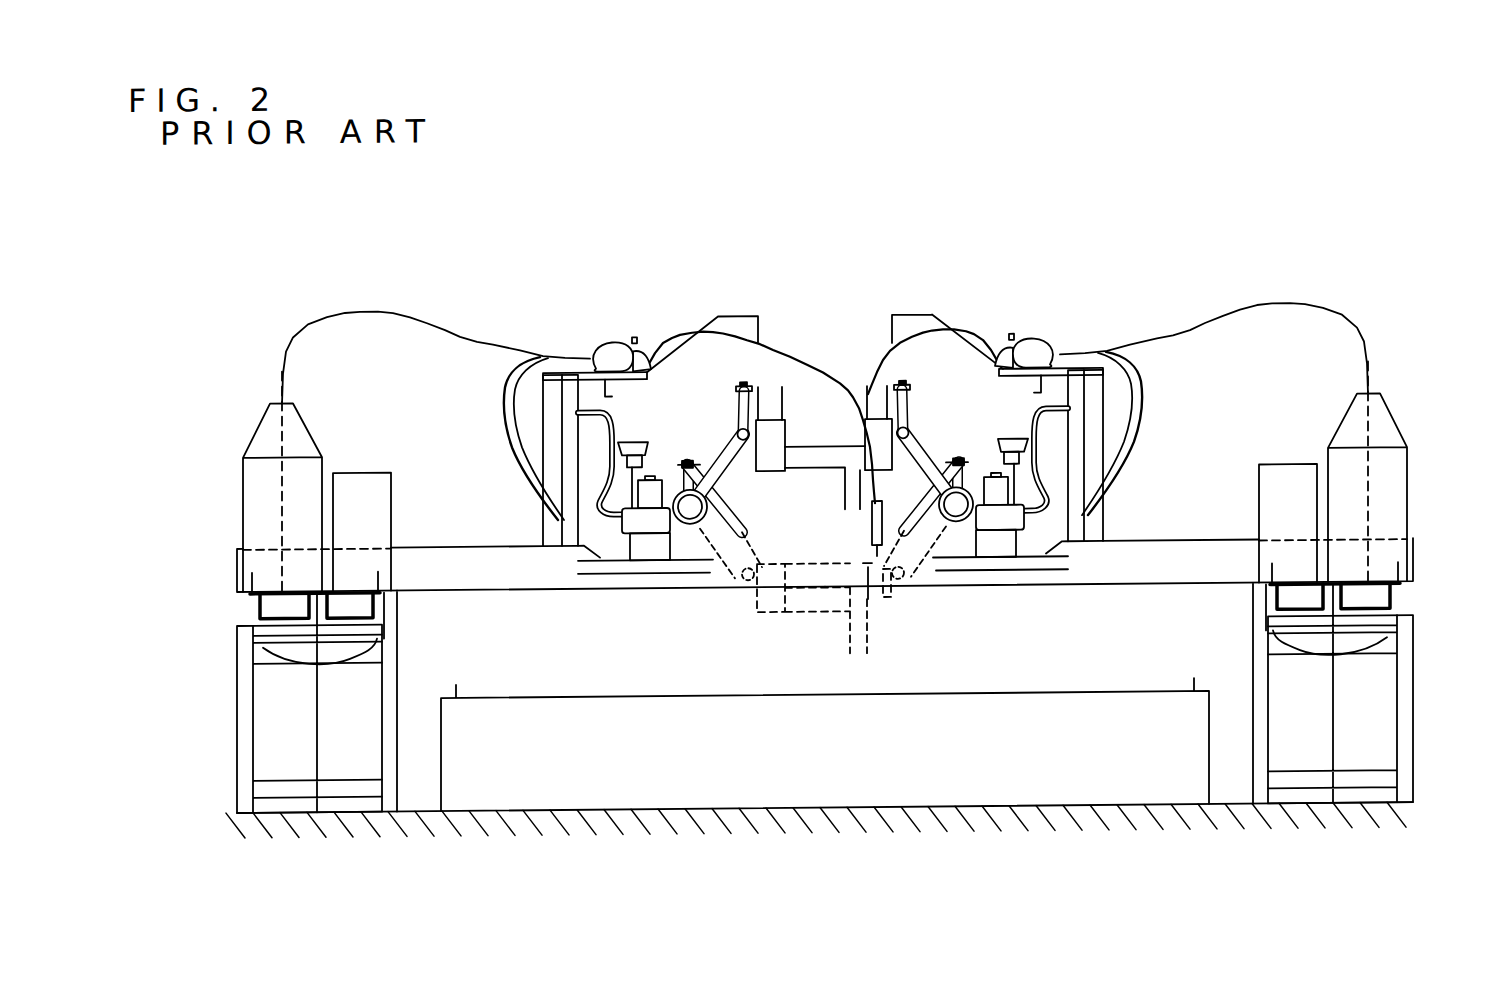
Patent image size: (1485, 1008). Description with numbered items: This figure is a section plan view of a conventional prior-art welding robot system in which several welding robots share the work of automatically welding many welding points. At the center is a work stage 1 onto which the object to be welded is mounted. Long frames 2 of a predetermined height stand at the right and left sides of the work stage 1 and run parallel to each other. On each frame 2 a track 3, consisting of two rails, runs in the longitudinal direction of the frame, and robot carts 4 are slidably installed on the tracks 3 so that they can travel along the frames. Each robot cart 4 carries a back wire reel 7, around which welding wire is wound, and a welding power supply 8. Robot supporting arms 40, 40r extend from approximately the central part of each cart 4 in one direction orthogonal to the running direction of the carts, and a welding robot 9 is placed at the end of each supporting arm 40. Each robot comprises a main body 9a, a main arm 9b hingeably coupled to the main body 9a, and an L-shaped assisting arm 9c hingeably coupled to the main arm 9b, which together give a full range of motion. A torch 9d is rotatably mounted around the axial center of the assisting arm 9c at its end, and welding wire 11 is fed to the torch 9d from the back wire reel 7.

The work stage 1 is at (795, 673).
The long frames 2 is at (237, 725).
The tracks 3 is at (377, 648).
The robot carts 4 is at (262, 604).
The back wire reel 7 is at (258, 480).
The welding power supply 8 is at (370, 480).
The welding robots 9 is at (823, 459).
The main body 9a is at (647, 534).
The main arm 9b is at (720, 464).
The L-shaped assisting arm 9c is at (823, 450).
The torch 9d is at (870, 533).
The welding wire 11 is at (440, 327).
The robot supporting arms 40 is at (495, 584).
The platform (right) 40r is at (1160, 586).